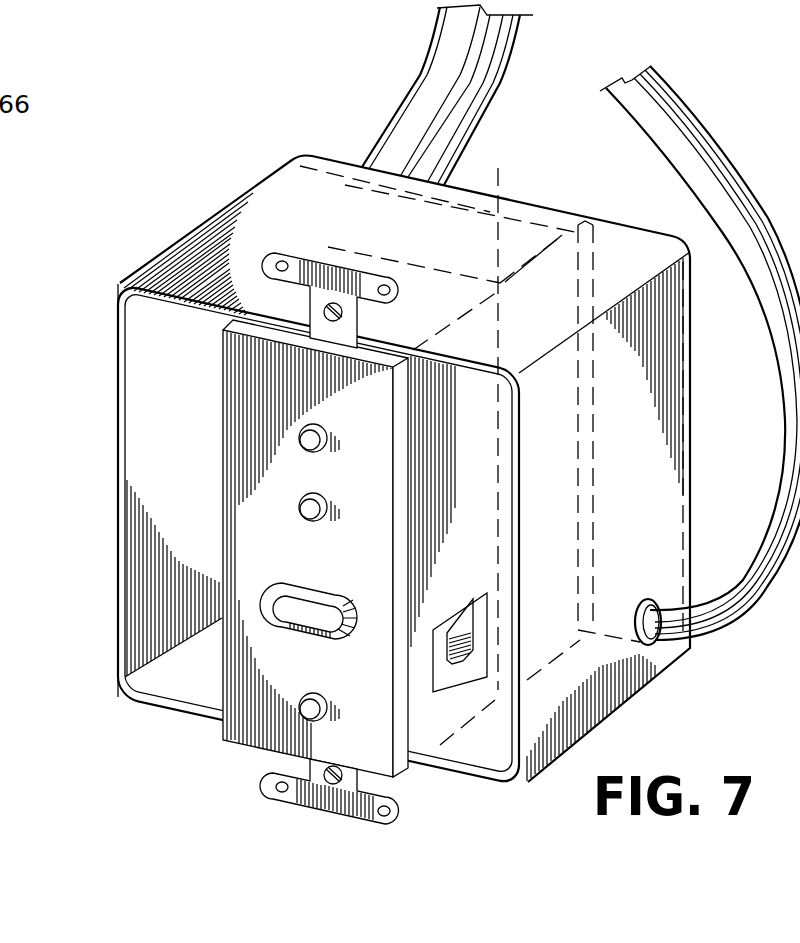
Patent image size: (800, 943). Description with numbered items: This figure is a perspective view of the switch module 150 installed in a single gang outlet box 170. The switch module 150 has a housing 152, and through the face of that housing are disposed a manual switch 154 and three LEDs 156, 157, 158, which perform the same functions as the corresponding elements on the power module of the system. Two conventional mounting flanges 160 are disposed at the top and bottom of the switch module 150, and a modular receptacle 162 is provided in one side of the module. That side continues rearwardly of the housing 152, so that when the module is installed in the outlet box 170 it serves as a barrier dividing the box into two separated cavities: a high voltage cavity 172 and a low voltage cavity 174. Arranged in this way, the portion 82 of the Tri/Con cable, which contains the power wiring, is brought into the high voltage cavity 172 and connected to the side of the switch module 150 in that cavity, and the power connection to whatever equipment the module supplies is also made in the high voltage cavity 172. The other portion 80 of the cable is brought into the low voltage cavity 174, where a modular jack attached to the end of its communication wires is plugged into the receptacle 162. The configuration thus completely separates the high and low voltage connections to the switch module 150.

The portion of Tri/Con cable 80 is at (723, 178).
The portion of Tri/Con cable 82 is at (430, 98).
The switch module 150 is at (200, 552).
The housing 152 is at (248, 395).
The manual switch 154 is at (300, 620).
The LED 156 is at (300, 440).
The LED 157 is at (300, 504).
The LED 158 is at (303, 713).
The mounting flange 160 is at (322, 260).
The modular receptacle 162 is at (468, 632).
The single gang outlet box 170 is at (115, 395).
The high voltage cavity 172 is at (173, 607).
The low voltage cavity 174 is at (502, 736).